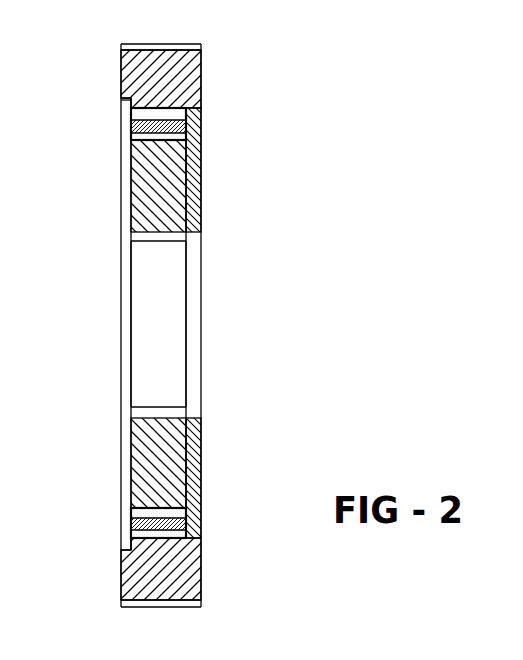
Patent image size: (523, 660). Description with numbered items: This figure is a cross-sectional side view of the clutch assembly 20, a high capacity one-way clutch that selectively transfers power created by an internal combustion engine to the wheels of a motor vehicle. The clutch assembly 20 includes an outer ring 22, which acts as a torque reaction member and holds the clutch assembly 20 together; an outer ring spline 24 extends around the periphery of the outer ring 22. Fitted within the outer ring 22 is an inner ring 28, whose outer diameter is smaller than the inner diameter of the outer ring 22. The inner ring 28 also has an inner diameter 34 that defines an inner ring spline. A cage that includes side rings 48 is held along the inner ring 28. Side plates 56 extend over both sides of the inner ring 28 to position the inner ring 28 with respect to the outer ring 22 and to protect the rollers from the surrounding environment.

The clutch assembly 20 is at (243, 389).
The outer ring 22 is at (121, 84).
The outer ring spline 24 is at (178, 44).
The inner ring 28 is at (131, 217).
The inner diameter 34 is at (152, 406).
The side rings 48 is at (131, 113).
The side plates 56 is at (131, 189).